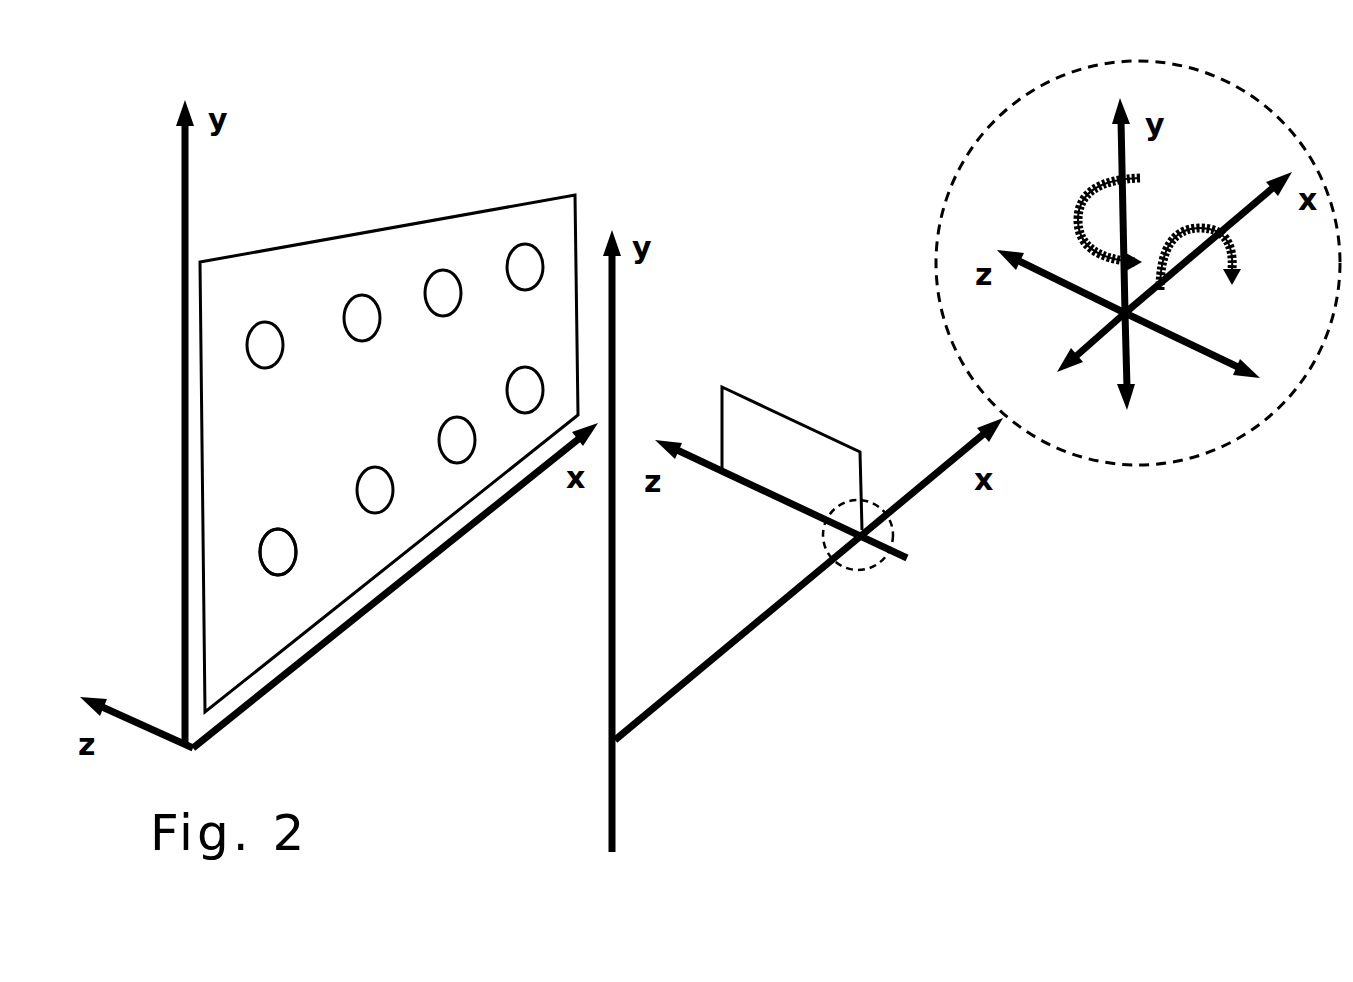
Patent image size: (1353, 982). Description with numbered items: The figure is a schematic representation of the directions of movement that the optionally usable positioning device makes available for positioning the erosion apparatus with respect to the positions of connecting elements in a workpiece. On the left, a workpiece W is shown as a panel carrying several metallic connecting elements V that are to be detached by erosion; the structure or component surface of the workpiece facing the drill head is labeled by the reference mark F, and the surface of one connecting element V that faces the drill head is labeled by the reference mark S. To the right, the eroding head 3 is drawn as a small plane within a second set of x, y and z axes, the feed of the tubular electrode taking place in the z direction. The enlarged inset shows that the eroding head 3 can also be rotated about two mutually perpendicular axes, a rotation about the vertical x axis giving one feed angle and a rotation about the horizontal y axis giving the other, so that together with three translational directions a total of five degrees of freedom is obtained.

The workpiece W is at (329, 204).
The connecting element V is at (395, 346).
The surface of the connecting element S is at (285, 564).
The structure or component surface F is at (683, 193).
The eroding head 3 is at (792, 434).